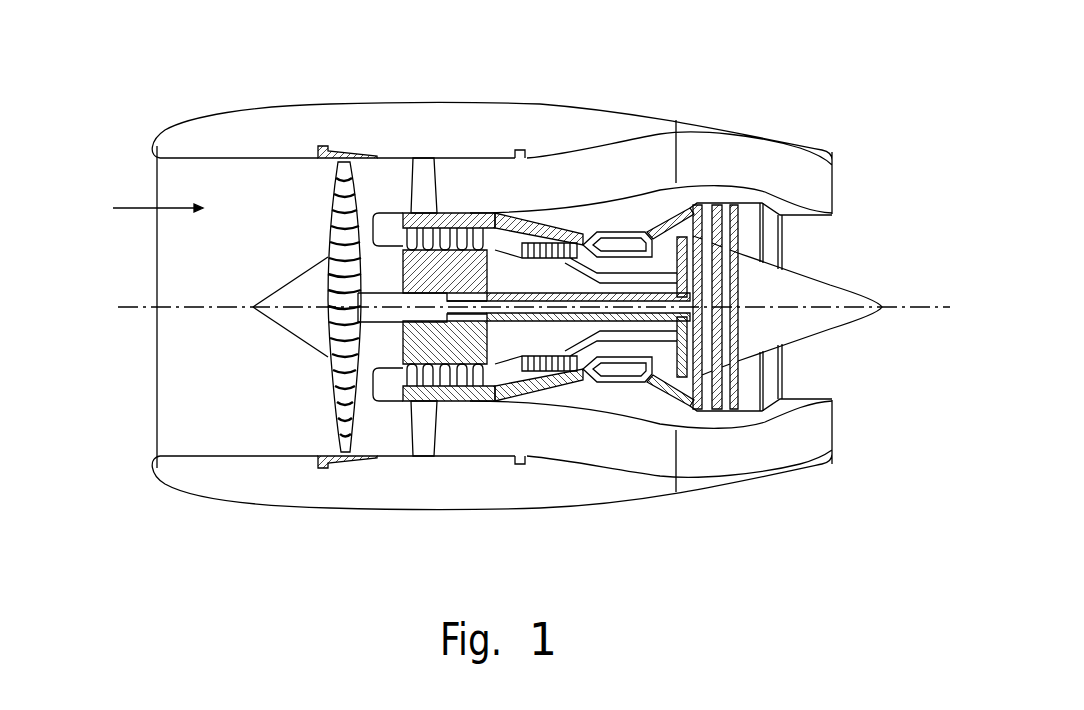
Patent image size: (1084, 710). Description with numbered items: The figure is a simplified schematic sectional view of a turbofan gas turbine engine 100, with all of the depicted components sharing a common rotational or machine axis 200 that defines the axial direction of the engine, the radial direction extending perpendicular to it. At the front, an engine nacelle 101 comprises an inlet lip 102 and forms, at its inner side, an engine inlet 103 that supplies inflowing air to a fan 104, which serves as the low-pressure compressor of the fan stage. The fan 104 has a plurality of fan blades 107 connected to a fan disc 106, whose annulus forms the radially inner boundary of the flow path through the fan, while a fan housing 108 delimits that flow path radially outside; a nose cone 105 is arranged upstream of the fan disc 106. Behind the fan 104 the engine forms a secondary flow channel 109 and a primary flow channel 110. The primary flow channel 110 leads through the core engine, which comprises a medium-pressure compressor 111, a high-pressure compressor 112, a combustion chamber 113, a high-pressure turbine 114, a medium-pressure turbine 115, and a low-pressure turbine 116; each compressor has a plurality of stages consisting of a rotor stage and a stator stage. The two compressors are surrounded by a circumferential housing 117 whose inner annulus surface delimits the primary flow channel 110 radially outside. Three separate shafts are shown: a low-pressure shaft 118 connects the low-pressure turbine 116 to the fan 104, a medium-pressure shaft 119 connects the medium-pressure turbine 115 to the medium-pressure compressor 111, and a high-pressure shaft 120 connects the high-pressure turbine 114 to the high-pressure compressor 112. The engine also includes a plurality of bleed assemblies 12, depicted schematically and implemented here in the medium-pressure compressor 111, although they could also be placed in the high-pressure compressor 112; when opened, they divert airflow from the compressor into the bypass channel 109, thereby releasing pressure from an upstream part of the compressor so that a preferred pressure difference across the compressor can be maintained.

The turbofan gas turbine engine 100 is at (523, 100).
The engine nacelle 101 is at (198, 140).
The inlet lip 102 is at (156, 146).
The engine inlet 103 is at (185, 158).
The fan 104 is at (319, 186).
The nose cone 105 is at (296, 278).
The fan disc 106 is at (330, 333).
The fan blades 107 is at (330, 382).
The fan housing 108 is at (358, 185).
The secondary flow channel 109 is at (364, 178).
The primary flow channel 110 is at (446, 222).
The medium-pressure compressor 111 is at (387, 233).
The high-pressure compressor 112 is at (546, 270).
The combustion chamber 113 is at (603, 230).
The high-pressure turbine 114 is at (661, 212).
The medium-pressure turbine 115 is at (684, 199).
The low-pressure turbine 116 is at (744, 212).
The circumferential housing 117 is at (496, 213).
The low-pressure shaft 118 is at (603, 310).
The medium-pressure shaft 119 is at (666, 337).
The high-pressure shaft 120 is at (627, 340).
The bleed assemblies 12 is at (421, 402).
The rotational axis 200 is at (898, 307).